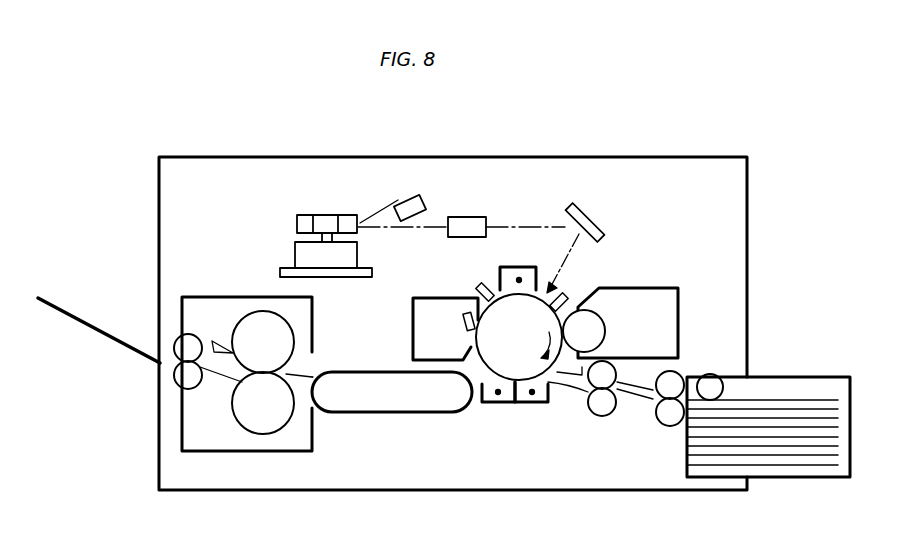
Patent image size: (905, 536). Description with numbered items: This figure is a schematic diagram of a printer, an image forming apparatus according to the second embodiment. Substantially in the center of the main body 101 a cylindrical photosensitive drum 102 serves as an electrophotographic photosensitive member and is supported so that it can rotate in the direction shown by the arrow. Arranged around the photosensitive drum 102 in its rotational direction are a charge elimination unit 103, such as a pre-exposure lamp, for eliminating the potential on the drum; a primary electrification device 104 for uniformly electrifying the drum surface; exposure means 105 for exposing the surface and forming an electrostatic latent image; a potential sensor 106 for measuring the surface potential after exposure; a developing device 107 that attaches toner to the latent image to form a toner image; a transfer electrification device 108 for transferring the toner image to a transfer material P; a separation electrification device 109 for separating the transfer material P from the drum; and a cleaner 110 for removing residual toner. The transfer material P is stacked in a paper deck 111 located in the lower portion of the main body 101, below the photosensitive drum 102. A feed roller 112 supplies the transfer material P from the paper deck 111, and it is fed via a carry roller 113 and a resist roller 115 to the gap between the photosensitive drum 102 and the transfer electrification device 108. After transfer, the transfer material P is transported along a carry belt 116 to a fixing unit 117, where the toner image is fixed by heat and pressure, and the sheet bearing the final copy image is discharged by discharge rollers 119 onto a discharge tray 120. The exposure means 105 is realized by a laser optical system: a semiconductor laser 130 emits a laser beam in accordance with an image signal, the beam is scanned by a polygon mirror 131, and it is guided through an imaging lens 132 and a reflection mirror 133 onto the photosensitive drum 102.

The main body 101 is at (690, 156).
The photosensitive drum 102 is at (483, 369).
The charge elimination unit 103 is at (478, 282).
The primary electrification device 104 is at (520, 268).
The exposure means 105 is at (573, 258).
The potential sensor 106 is at (569, 296).
The developing device 107 is at (667, 288).
The transfer electrification device 108 is at (537, 405).
The separation electrification device 109 is at (469, 405).
The cleaner 110 is at (423, 297).
The paper deck 111 is at (812, 377).
The feed roller 112 is at (711, 372).
The carry roller 113 is at (678, 372).
The resist roller 115 is at (660, 426).
The carry belt 116 is at (370, 372).
The fixing unit 117 is at (222, 297).
The discharge rollers 119 is at (195, 335).
The discharge tray 120 is at (91, 305).
The semiconductor laser 130 is at (421, 203).
The polygon mirror 131 is at (300, 215).
The imaging lens 132 is at (478, 217).
The reflection mirror 133 is at (590, 216).
The transfer material P is at (753, 400).